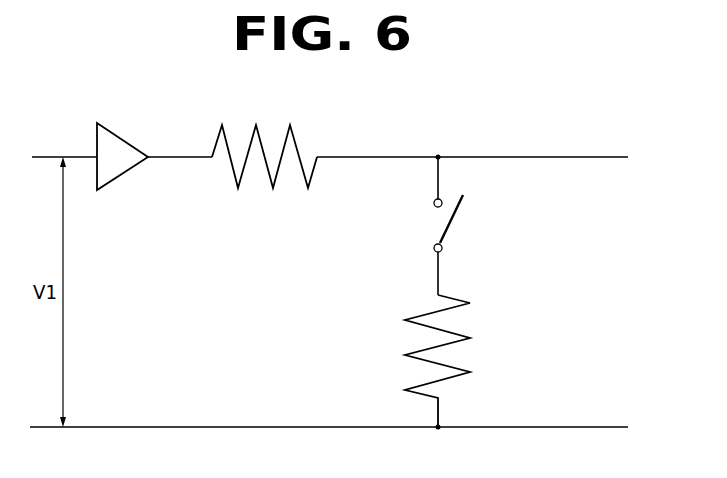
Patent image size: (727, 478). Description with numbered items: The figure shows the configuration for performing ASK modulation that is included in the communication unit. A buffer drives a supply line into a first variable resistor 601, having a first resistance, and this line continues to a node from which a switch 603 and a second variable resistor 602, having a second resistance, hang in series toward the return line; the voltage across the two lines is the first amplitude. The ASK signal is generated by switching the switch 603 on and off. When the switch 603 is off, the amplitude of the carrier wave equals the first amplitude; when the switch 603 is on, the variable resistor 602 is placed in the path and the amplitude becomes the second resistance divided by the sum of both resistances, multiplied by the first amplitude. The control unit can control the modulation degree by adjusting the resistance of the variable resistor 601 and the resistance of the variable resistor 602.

The variable resistor 601 is at (297, 138).
The variable resistor 602 is at (472, 303).
The switch 603 is at (463, 227).